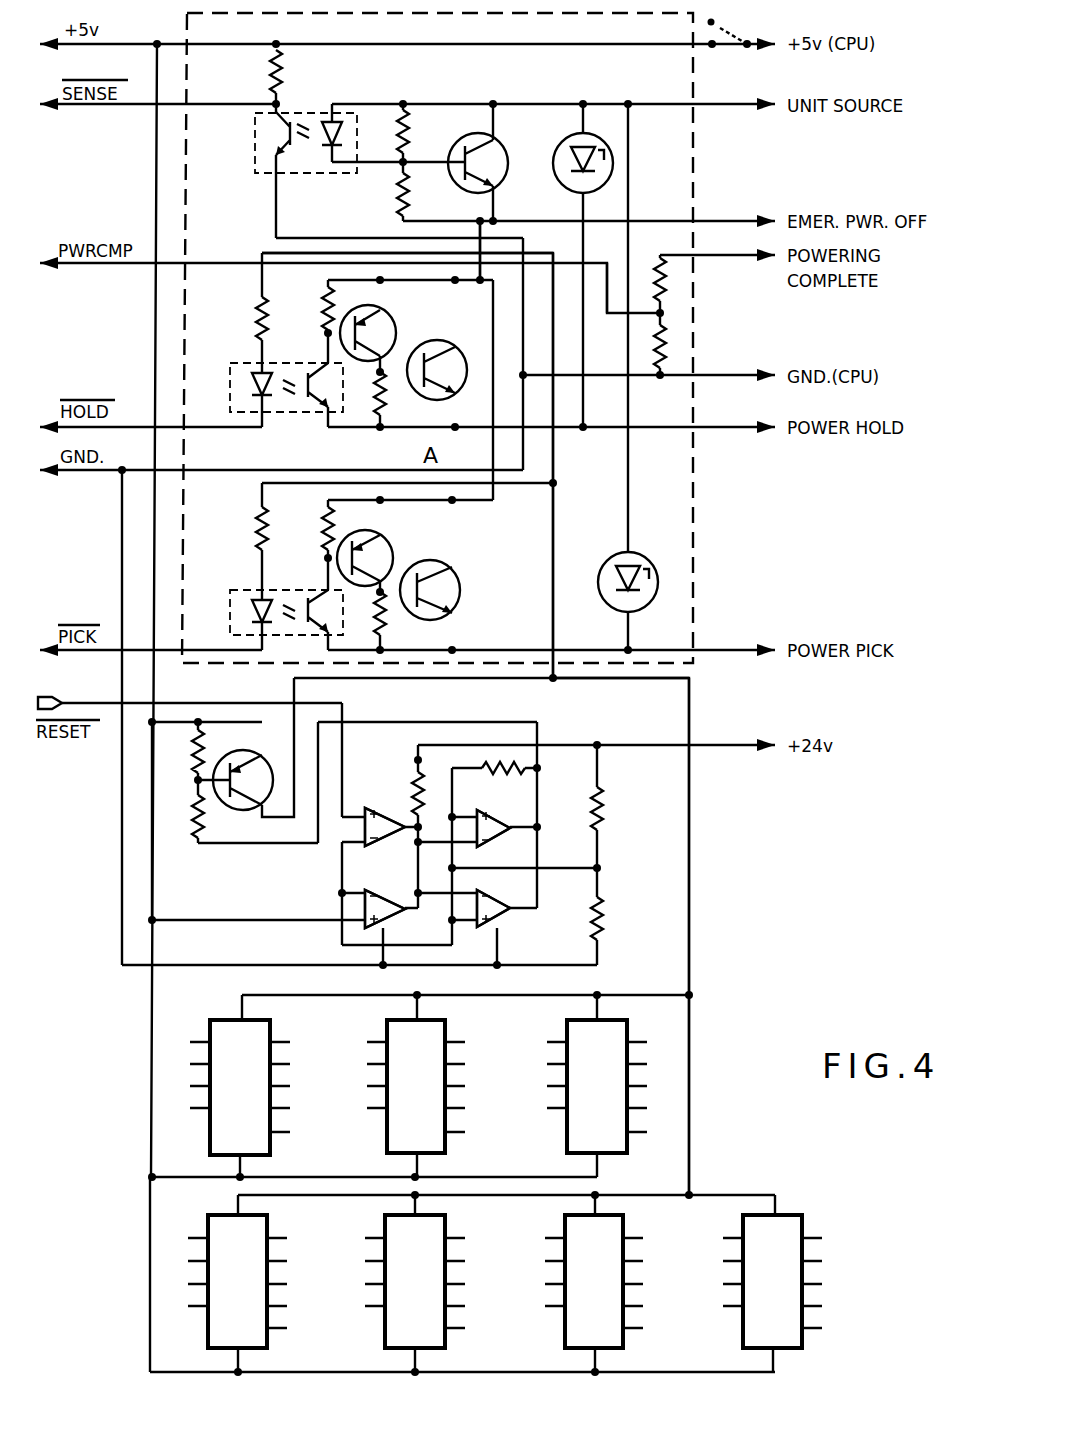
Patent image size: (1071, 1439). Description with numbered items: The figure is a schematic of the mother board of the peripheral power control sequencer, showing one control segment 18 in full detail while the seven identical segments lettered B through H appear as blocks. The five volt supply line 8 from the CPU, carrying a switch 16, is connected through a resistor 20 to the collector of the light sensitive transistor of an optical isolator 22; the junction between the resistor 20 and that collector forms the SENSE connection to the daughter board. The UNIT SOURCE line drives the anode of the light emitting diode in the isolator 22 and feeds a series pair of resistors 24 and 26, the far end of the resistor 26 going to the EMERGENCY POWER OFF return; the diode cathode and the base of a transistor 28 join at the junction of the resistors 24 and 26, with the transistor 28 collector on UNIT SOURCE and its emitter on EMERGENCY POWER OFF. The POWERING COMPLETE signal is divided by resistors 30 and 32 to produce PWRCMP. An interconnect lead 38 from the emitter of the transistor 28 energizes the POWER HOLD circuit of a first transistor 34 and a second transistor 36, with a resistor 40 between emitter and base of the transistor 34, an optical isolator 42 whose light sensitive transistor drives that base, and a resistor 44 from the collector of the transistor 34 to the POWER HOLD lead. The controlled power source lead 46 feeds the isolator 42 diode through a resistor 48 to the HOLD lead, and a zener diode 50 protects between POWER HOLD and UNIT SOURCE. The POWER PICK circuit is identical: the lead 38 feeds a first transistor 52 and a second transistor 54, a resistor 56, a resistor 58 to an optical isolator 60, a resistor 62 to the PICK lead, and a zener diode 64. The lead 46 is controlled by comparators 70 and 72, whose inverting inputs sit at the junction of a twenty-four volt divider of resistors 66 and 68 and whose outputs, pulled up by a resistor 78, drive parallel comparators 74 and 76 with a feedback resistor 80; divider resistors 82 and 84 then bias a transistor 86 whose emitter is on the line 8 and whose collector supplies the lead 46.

The 5 V supply line 8 is at (692, 44).
The switch 16 is at (730, 30).
The control segment 18 is at (696, 556).
The resistor 20 is at (284, 72).
The optical isolator 22 is at (262, 173).
The resistor 24 is at (410, 126).
The resistor 26 is at (398, 194).
The transistor 28 is at (490, 142).
The resistor 30 is at (654, 274).
The resistor 32 is at (668, 352).
The first transistor 34 is at (388, 317).
The second transistor 36 is at (448, 354).
The interconnect lead 38 is at (484, 233).
The resistor 40 is at (322, 309).
The optical isolator 42 is at (310, 416).
The resistor 44 is at (384, 410).
The internal controlled power source lead 46 is at (262, 253).
The resistor 48 is at (256, 320).
The zener diode 50 is at (560, 192).
The first transistor 52 is at (388, 537).
The second transistor 54 is at (462, 592).
The resistor 56 is at (386, 632).
The resistor 58 is at (324, 527).
The optical isolator 60 is at (236, 590).
The resistor 62 is at (258, 528).
The zener diode 64 is at (642, 552).
The resistor 66 is at (602, 806).
The resistor 68 is at (602, 912).
The comparator 70 is at (388, 846).
The comparator 72 is at (396, 914).
The comparator 74 is at (502, 844).
The comparator 76 is at (492, 918).
The pull-up resistor 78 is at (424, 790).
The feedback resistor 80 is at (492, 774).
The resistor 82 is at (194, 772).
The resistor 84 is at (192, 814).
The transistor 86 is at (248, 810).